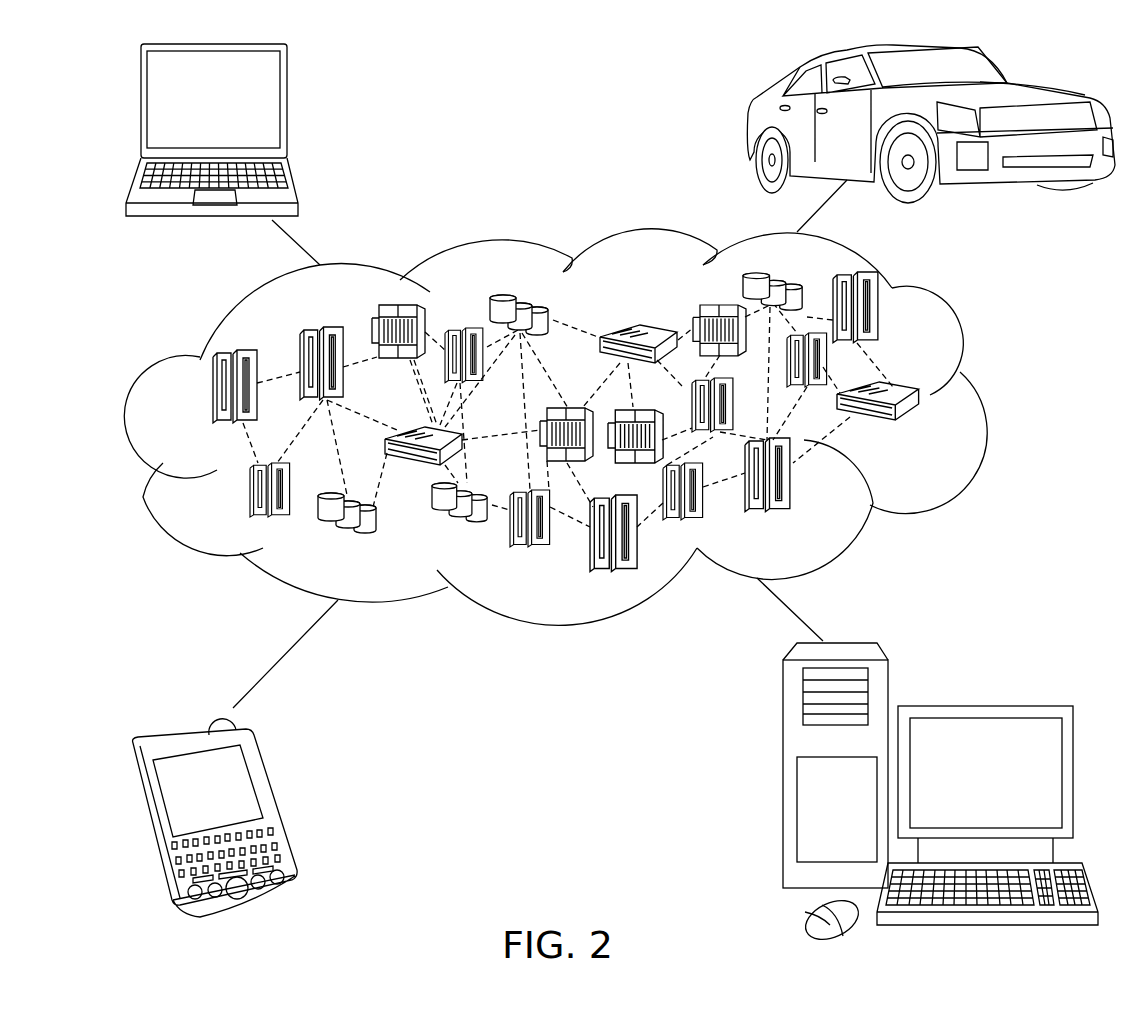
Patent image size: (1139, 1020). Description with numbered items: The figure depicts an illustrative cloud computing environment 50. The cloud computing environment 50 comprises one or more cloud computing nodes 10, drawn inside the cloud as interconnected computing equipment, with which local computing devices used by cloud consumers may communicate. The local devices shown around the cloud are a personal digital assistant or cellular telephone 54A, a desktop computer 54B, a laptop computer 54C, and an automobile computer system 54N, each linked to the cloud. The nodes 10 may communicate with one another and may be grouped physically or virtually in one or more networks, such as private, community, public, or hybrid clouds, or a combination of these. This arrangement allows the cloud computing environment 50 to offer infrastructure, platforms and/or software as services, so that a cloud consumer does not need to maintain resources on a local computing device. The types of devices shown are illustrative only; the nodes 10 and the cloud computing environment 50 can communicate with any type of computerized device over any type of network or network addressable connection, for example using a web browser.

The cloud computing node 10 is at (936, 431).
The cloud computing environment 50 is at (585, 427).
The personal digital assistant or cellular telephone 54A is at (275, 803).
The desktop computer 54B is at (983, 705).
The laptop computer 54C is at (286, 108).
The automobile computer system 54N is at (750, 121).